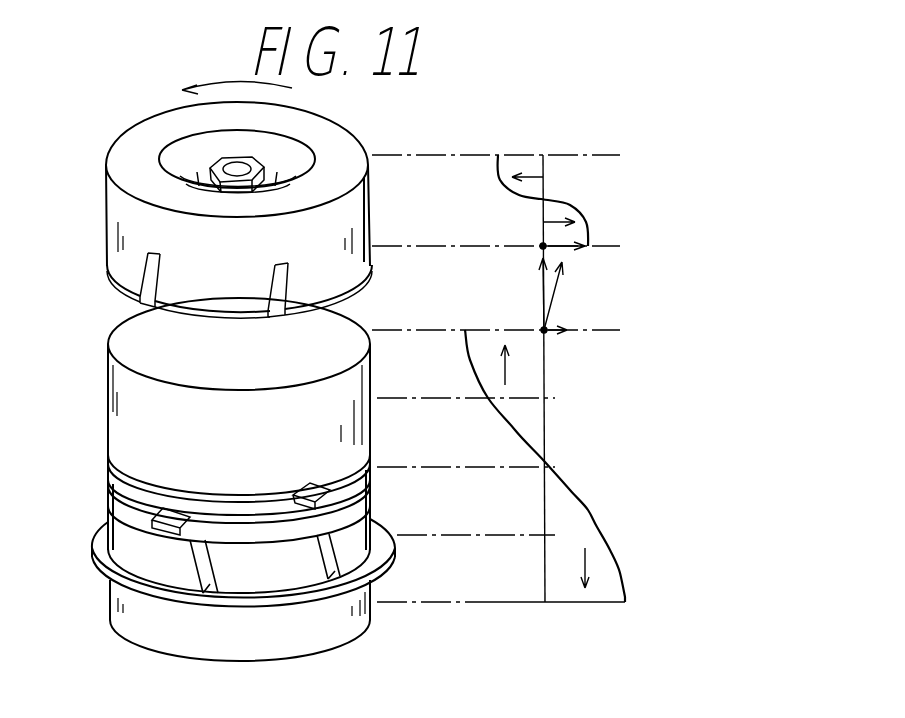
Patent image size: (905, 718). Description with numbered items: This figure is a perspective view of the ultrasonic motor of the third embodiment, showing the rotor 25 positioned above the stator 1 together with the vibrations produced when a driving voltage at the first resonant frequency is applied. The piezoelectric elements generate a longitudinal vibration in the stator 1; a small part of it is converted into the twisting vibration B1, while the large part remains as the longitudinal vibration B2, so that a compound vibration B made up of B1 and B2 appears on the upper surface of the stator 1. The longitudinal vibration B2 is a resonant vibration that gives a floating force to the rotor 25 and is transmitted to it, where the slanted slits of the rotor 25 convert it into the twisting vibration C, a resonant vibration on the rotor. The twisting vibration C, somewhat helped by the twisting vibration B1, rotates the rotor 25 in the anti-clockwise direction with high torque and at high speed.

The rotor 25 is at (122, 219).
The stator 1 is at (96, 396).
The compound vibration B is at (555, 295).
The twisting vibration B1 is at (548, 334).
The longitudinal vibration B2 is at (543, 286).
The twisting vibration C is at (572, 250).